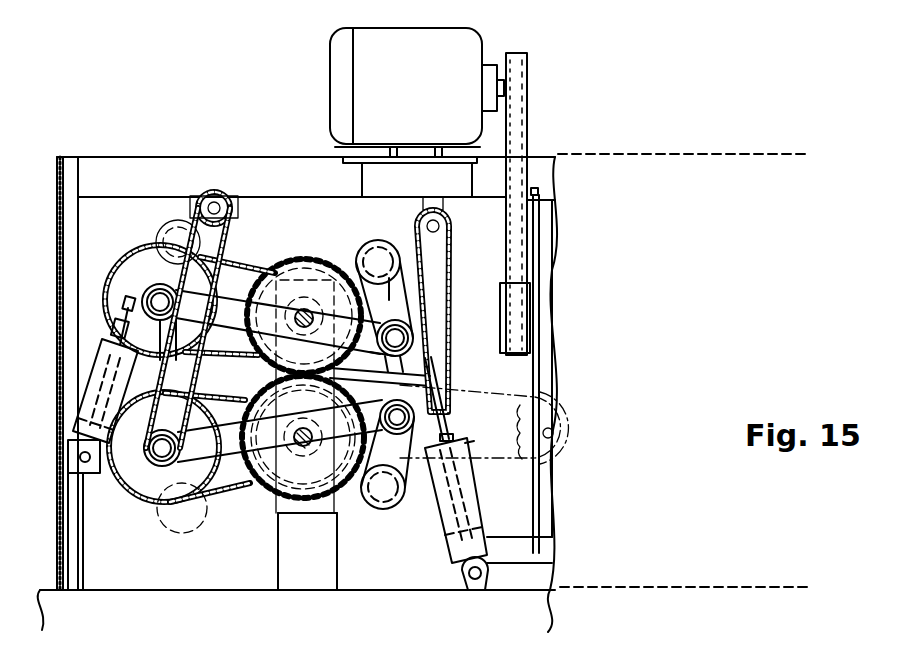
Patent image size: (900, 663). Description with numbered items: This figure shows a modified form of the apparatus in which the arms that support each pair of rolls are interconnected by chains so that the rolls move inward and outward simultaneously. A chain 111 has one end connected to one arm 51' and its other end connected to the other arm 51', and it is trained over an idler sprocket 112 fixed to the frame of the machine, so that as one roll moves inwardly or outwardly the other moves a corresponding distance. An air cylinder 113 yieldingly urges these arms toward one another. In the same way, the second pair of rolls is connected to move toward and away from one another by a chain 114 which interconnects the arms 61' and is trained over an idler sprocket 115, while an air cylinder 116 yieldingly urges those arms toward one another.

The arm 51' is at (234, 386).
The arm 61' is at (368, 390).
The chain 111 is at (186, 224).
The idler sprocket 112 is at (214, 200).
The air cylinder 113 is at (82, 400).
The chain 114 is at (418, 243).
The idler sprocket 115 is at (417, 186).
The air cylinder 116 is at (470, 497).